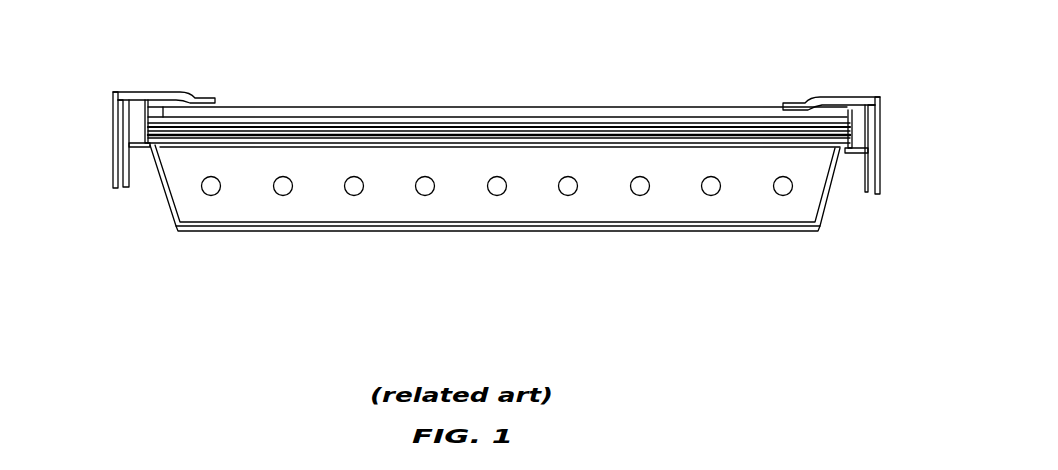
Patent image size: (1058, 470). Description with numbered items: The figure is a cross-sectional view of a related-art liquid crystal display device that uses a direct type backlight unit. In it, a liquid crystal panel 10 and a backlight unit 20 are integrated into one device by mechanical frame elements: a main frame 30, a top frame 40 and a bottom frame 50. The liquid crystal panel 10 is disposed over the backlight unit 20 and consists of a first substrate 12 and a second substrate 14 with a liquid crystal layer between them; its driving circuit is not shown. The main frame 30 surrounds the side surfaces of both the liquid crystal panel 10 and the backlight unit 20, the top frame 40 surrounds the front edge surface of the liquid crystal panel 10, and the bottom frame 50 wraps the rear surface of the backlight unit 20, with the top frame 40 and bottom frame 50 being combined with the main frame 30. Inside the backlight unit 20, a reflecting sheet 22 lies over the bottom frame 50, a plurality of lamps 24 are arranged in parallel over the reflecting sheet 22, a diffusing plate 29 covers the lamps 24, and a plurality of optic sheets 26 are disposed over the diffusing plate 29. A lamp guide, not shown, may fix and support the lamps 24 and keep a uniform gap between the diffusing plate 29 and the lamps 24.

The liquid crystal panel 10 is at (499, 63).
The first substrate 12 is at (443, 117).
The second substrate 14 is at (380, 108).
The backlight unit 20 is at (499, 243).
The reflecting sheet 22 is at (548, 226).
The lamps 24 is at (660, 305).
The optic sheets 26 is at (590, 130).
The diffusing plate 29 is at (657, 145).
The main frame 30 is at (118, 130).
The top frame 40 is at (190, 92).
The bottom frame 50 is at (237, 228).